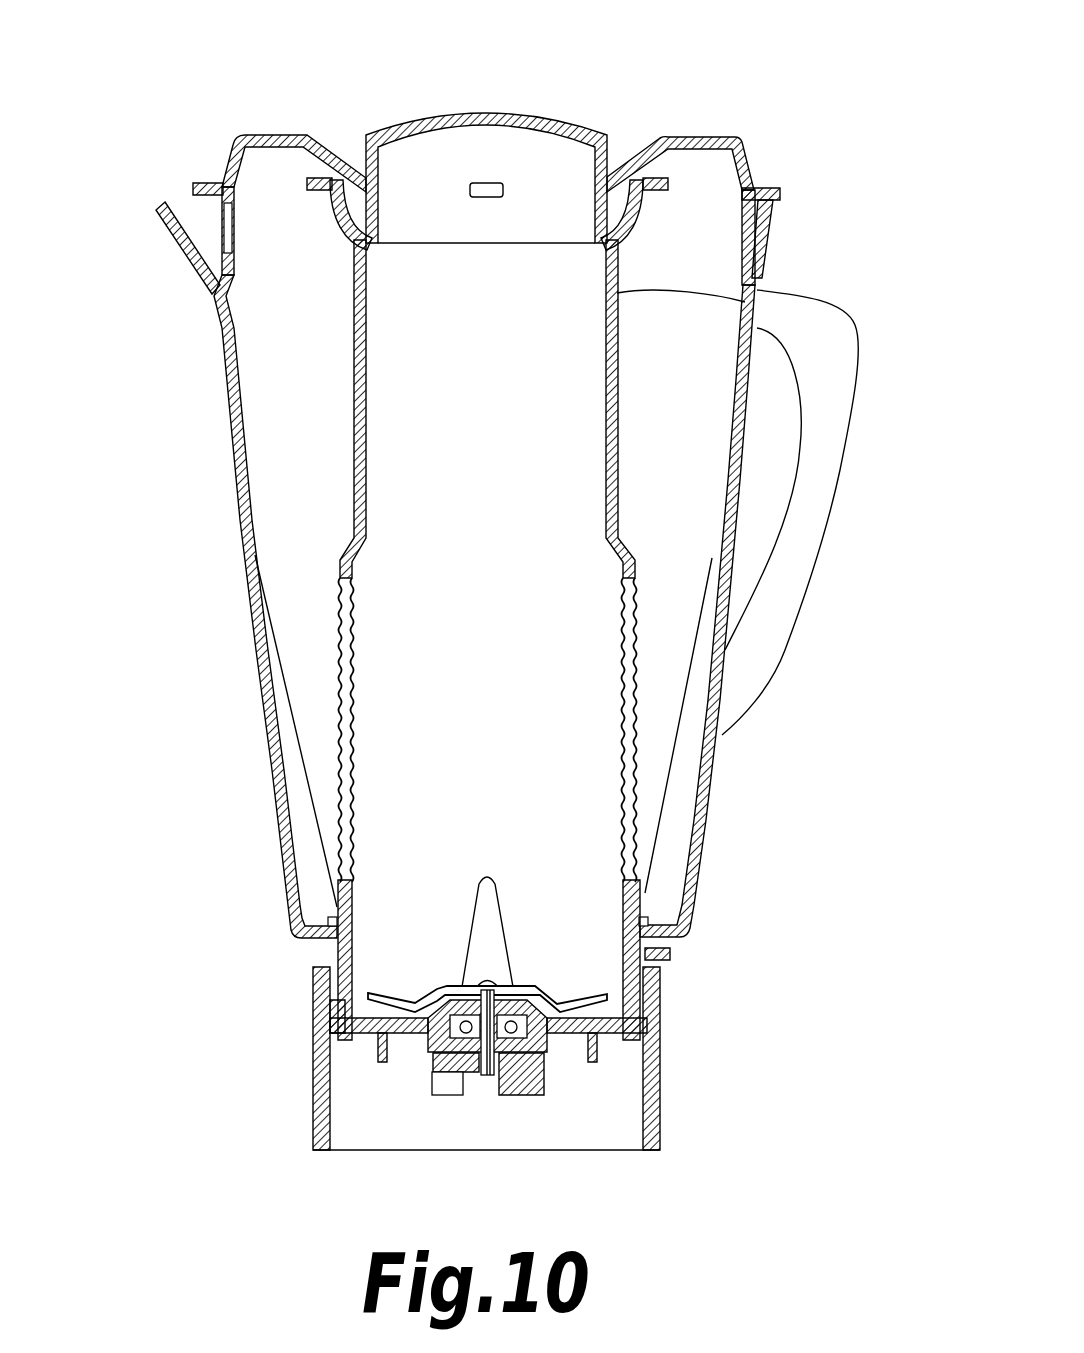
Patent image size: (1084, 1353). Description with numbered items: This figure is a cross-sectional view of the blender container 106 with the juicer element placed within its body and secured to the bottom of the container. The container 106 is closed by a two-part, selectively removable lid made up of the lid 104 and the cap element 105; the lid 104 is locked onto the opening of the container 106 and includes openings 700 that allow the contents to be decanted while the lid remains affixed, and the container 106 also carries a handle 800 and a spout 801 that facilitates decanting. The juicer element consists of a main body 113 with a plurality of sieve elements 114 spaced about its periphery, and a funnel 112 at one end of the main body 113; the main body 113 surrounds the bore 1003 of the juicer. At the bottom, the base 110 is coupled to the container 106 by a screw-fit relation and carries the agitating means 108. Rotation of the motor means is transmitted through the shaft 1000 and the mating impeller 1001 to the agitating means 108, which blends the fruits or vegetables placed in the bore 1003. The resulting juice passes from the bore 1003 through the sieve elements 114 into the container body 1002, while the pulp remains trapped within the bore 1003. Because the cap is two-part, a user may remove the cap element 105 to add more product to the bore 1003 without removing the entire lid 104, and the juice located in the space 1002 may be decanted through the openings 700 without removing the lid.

The lid 104 is at (250, 135).
The cap element 105 is at (458, 118).
The funnel 112 is at (645, 222).
The openings 700 is at (226, 223).
The spout 801 is at (176, 230).
The main body 113 is at (748, 303).
The handle 800 is at (832, 359).
The blender container 106 is at (252, 636).
The container body 1002 is at (317, 716).
The bore 1003 is at (545, 703).
The sieve elements 114 is at (340, 812).
The agitating means 108 is at (493, 930).
The base 110 is at (660, 1093).
The shaft 1000 is at (490, 1075).
The impeller 1001 is at (527, 1095).